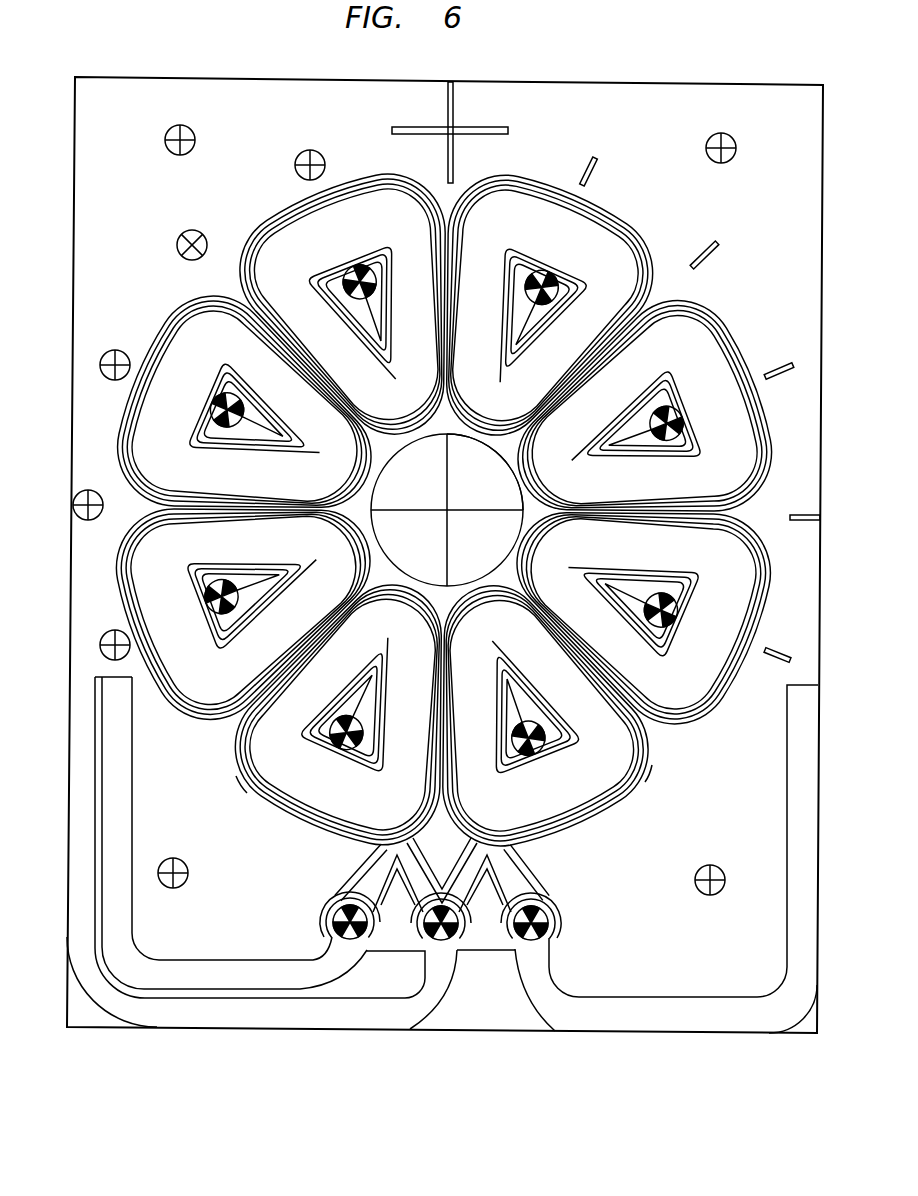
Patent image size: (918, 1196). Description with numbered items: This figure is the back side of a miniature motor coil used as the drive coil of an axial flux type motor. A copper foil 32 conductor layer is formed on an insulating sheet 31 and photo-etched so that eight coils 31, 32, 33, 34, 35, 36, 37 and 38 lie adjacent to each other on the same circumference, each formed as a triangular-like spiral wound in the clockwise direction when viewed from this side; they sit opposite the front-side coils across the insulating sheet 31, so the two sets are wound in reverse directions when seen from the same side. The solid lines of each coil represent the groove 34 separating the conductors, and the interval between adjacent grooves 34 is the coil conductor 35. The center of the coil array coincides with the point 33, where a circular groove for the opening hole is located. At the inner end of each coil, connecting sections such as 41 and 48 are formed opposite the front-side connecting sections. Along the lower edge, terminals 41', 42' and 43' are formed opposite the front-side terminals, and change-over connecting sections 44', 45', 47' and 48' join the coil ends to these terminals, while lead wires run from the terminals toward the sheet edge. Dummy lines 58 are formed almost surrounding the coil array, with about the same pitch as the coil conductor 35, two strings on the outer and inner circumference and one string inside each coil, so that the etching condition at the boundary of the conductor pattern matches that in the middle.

The insulating sheet 31 is at (600, 810).
The copper foil 32 is at (756, 600).
The center point 33 is at (726, 345).
The groove 34 is at (612, 225).
The coil conductor 35 is at (292, 220).
The circular groove for opening hole 36 is at (160, 320).
The coil 3₇ 37 is at (126, 577).
The coil 3₈ 38 is at (298, 809).
The connecting section 4₁ 41 is at (528, 726).
The connecting section 4₈ 48 is at (347, 725).
The terminal 41' is at (556, 916).
The terminal 42' is at (461, 920).
The terminal 43' is at (326, 915).
The change-over connecting section 44' is at (537, 873).
The change-over connecting section 45' is at (442, 868).
The change-over connecting section 47' is at (398, 918).
The change-over connecting section 48' is at (351, 872).
The dummy lines 58 is at (246, 787).